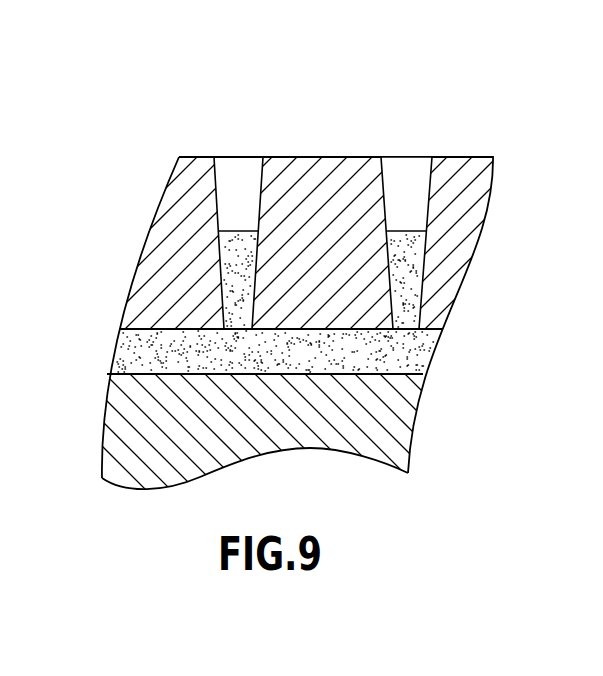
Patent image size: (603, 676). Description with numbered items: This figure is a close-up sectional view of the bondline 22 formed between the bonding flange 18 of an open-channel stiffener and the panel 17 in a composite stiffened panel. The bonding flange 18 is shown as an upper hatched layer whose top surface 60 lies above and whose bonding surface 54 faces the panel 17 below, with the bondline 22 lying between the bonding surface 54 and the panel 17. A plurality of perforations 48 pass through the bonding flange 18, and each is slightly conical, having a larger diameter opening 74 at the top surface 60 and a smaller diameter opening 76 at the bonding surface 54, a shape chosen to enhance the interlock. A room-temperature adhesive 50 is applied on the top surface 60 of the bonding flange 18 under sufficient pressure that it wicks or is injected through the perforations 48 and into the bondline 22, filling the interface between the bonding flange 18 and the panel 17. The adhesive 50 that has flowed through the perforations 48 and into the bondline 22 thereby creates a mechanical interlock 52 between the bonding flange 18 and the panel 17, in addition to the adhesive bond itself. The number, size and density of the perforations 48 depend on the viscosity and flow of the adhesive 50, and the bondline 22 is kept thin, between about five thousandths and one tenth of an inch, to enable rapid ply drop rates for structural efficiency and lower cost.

The panel 17 is at (105, 456).
The bonding flange 18 is at (460, 207).
The bondline 22 is at (417, 347).
The perforations 48 is at (241, 193).
The adhesive 50 is at (238, 274).
The mechanical interlock 52 is at (122, 355).
The bonding surface 54 is at (163, 320).
The top surface 60 is at (337, 157).
The larger diameter opening 74 is at (245, 157).
The smaller diameter opening 76 is at (407, 327).